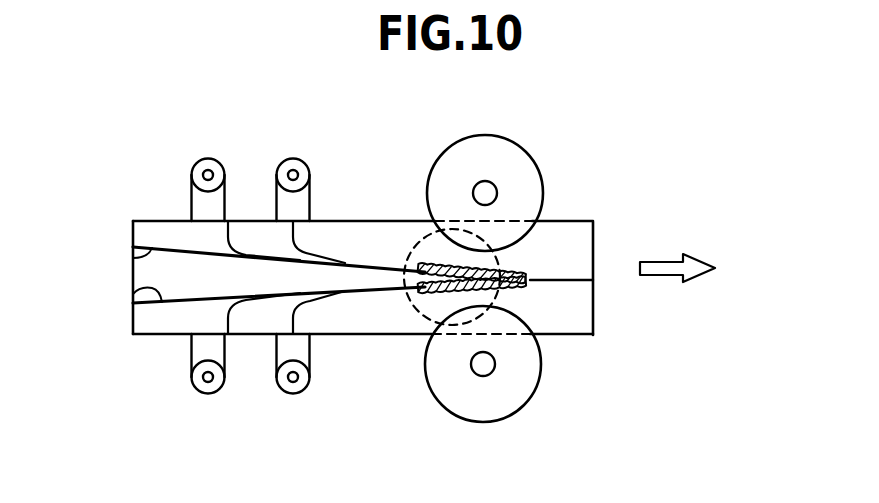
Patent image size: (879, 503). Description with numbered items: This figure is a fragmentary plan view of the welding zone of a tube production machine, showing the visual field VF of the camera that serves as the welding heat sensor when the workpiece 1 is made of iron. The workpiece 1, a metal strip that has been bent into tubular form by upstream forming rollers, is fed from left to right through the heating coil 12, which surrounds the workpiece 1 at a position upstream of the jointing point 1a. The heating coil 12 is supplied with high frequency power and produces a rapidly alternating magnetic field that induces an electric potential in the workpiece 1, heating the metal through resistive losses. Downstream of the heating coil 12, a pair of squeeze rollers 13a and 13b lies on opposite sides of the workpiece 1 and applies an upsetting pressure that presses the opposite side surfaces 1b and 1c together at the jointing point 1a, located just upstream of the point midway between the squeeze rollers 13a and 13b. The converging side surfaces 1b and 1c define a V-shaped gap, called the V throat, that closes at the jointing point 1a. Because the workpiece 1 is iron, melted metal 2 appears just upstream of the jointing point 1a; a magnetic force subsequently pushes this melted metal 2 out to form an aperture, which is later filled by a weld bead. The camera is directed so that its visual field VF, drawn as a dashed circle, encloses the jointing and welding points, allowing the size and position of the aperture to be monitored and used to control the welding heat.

The workpiece 1 is at (366, 221).
The jointing point 1a is at (508, 285).
The opposite side surface 1b is at (133, 256).
The opposite side surface 1c is at (133, 295).
The melted metal 2 is at (512, 276).
The heating coil 12 is at (251, 257).
The squeeze roller 13a is at (530, 156).
The squeeze roller 13b is at (537, 385).
The visual field VF is at (402, 318).